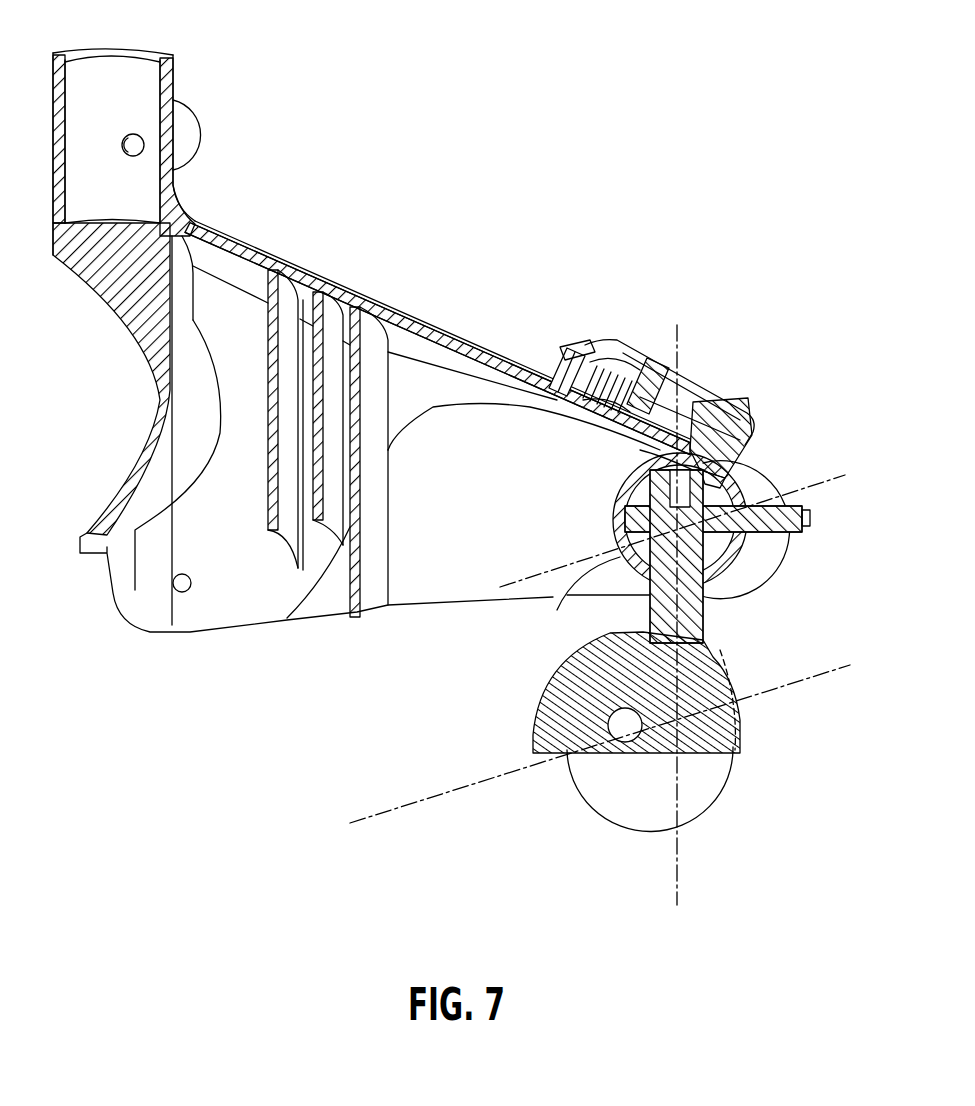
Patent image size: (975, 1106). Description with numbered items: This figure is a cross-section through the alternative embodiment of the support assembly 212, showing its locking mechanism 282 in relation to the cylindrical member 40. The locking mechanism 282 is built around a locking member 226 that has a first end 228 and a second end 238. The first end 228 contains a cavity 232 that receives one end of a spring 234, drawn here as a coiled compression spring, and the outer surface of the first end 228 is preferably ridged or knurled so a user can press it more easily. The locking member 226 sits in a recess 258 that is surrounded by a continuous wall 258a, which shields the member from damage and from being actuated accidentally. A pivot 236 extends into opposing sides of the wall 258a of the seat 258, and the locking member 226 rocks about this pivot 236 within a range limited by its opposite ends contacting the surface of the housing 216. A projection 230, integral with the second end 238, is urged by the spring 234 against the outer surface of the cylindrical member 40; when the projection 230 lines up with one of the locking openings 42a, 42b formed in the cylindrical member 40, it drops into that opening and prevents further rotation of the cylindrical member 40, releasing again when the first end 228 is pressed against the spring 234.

The support assembly 212 is at (317, 262).
The housing 216 is at (388, 303).
The locking member 226 is at (613, 326).
The first end 228 is at (610, 337).
The projection 230 is at (640, 450).
The cavity 232 is at (577, 352).
The spring 234 is at (557, 367).
The pivot 236 is at (650, 387).
The second end 238 is at (715, 393).
The locking mechanism 282 is at (781, 407).
The recess 258 is at (757, 432).
The continuous wall 258a is at (755, 478).
The locking opening 42a is at (617, 487).
The locking opening 42b is at (627, 477).
The cylindrical member 40 is at (597, 567).